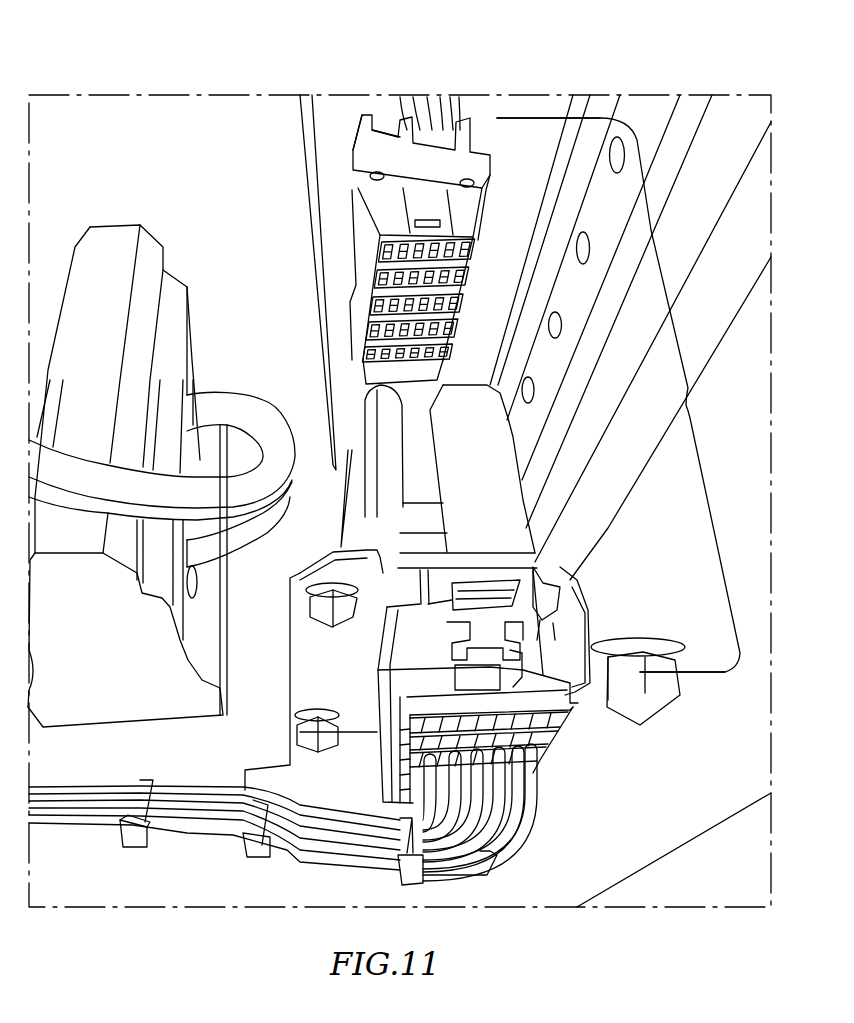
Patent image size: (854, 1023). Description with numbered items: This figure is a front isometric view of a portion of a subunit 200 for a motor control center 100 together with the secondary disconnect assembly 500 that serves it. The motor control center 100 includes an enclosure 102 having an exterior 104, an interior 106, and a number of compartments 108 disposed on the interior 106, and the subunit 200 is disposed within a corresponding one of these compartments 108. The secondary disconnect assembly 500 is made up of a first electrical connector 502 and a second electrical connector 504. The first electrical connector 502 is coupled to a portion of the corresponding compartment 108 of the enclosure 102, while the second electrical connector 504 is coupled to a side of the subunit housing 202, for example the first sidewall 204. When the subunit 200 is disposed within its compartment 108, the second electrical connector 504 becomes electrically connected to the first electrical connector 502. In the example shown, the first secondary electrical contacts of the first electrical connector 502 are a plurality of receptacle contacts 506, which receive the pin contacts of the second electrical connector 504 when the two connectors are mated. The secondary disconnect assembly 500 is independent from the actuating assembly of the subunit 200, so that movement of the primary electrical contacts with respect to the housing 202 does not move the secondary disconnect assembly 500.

The motor control center 100 is at (688, 970).
The enclosure 102 is at (692, 780).
The exterior 104 is at (573, 877).
The interior 106 is at (508, 108).
The compartment 108 is at (577, 438).
The subunit 200 is at (110, 877).
The subunit housing 202 is at (332, 785).
The first sidewall 204 is at (330, 412).
The secondary disconnect assembly 500 is at (750, 394).
The first electrical connector 502 is at (464, 224).
The second electrical connector 504 is at (553, 660).
The receptacle contacts 506 is at (445, 250).